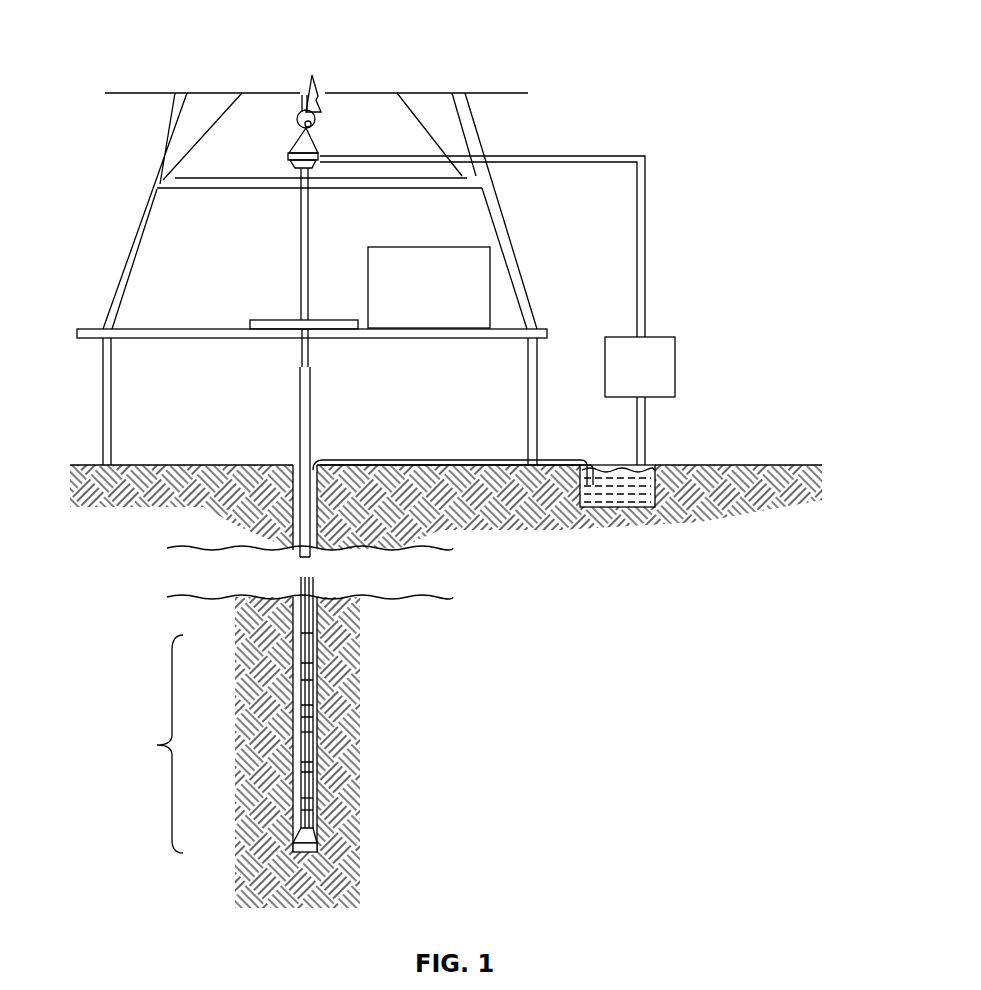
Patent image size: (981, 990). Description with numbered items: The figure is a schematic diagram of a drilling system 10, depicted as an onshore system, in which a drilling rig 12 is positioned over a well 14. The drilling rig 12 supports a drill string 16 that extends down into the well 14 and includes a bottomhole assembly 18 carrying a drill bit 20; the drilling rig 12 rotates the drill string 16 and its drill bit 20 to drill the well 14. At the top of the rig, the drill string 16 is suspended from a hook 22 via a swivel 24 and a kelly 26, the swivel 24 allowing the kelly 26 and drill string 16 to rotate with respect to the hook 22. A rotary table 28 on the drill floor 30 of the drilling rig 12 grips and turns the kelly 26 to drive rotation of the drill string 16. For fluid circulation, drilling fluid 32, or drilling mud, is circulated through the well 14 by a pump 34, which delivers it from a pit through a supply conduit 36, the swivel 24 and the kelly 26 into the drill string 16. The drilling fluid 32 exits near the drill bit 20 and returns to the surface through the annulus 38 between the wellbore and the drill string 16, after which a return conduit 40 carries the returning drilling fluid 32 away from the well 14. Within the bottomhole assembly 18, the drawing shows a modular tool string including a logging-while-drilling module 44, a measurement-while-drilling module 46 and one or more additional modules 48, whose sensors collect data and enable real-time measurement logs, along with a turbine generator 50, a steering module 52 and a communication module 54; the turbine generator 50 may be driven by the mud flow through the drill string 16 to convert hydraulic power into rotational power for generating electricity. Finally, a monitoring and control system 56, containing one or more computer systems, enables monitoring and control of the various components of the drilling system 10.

The drilling system 10 is at (100, 28).
The drilling rig 12 is at (142, 258).
The well 14 is at (294, 462).
The drill string 16 is at (311, 400).
The bottomhole assembly 18 is at (446, 686).
The drill bit 20 is at (310, 843).
The hook 22 is at (322, 125).
The swivel 24 is at (290, 157).
The kelly 26 is at (300, 222).
The rotary table 28 is at (278, 319).
The drill floor 30 is at (90, 328).
The drilling fluid 32 is at (620, 478).
The pump 34 is at (665, 336).
The supply conduit 36 is at (566, 156).
The annulus 38 is at (293, 600).
The return conduit 40 is at (422, 459).
The logging-while-drilling (LWD) module 44 is at (306, 763).
The measurement-while-drilling (MWD) module 46 is at (306, 792).
The additional modules 48 is at (306, 733).
The turbine generator 50 is at (306, 706).
The steering module 52 is at (306, 814).
The communication module 54 is at (304, 665).
The monitoring and control system 56 is at (400, 246).